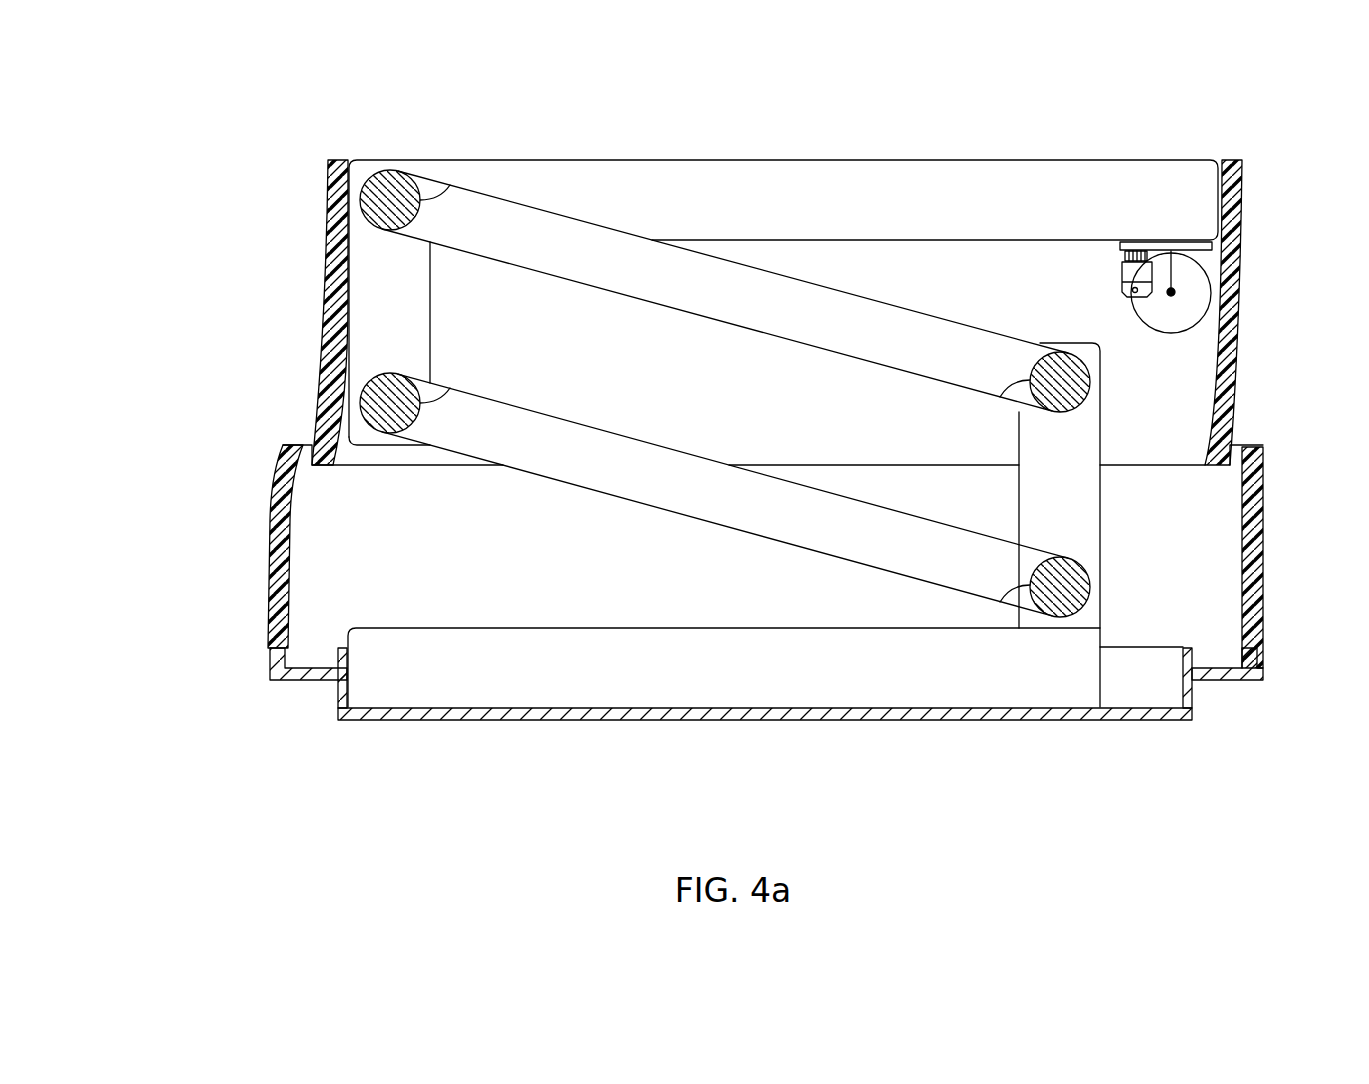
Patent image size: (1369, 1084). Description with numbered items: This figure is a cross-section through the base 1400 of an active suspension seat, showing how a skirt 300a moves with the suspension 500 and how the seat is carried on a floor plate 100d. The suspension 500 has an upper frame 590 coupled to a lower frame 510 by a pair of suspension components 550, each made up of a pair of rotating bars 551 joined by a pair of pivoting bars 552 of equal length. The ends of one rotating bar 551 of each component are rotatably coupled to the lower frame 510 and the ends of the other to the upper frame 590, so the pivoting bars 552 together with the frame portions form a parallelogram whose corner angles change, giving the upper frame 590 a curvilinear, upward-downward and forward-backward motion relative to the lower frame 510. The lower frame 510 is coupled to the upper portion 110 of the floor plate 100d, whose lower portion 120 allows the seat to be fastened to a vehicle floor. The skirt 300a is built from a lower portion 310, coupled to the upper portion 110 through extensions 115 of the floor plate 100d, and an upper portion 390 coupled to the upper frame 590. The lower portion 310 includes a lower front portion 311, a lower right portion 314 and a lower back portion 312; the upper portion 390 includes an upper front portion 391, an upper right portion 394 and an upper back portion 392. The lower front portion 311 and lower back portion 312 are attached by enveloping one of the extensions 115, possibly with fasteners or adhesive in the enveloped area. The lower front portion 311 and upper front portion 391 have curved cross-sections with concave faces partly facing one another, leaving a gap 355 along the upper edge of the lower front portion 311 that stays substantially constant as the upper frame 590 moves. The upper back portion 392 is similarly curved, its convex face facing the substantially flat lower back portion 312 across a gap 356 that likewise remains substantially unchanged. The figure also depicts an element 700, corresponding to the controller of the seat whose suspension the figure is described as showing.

The base 1400 is at (164, 159).
The suspension 500 is at (1040, 137).
The skirt 300a is at (759, 414).
The upper front portion 391 is at (328, 262).
The upper back portion 392 is at (1244, 298).
The lower front portion 311 is at (270, 568).
The lower back portion 312 is at (1263, 568).
The lower portion 310 is at (290, 588).
The gap 355 is at (303, 438).
The gap 356 is at (1240, 438).
The upper portion 390 is at (348, 343).
The upper right portion 394 is at (1014, 294).
The lower right portion 314 is at (892, 499).
The upper frame 590 is at (770, 214).
The suspension component 550 is at (725, 363).
The rotating bar 551 is at (420, 198).
The pivoting bar 552 is at (865, 292).
The lower frame 510 is at (684, 681).
The sensor assembly 700 is at (1211, 343).
The floor plate 100d is at (764, 726).
The upper portion 110 is at (335, 692).
The lower portion 120 is at (592, 722).
The extension 115 is at (313, 682).